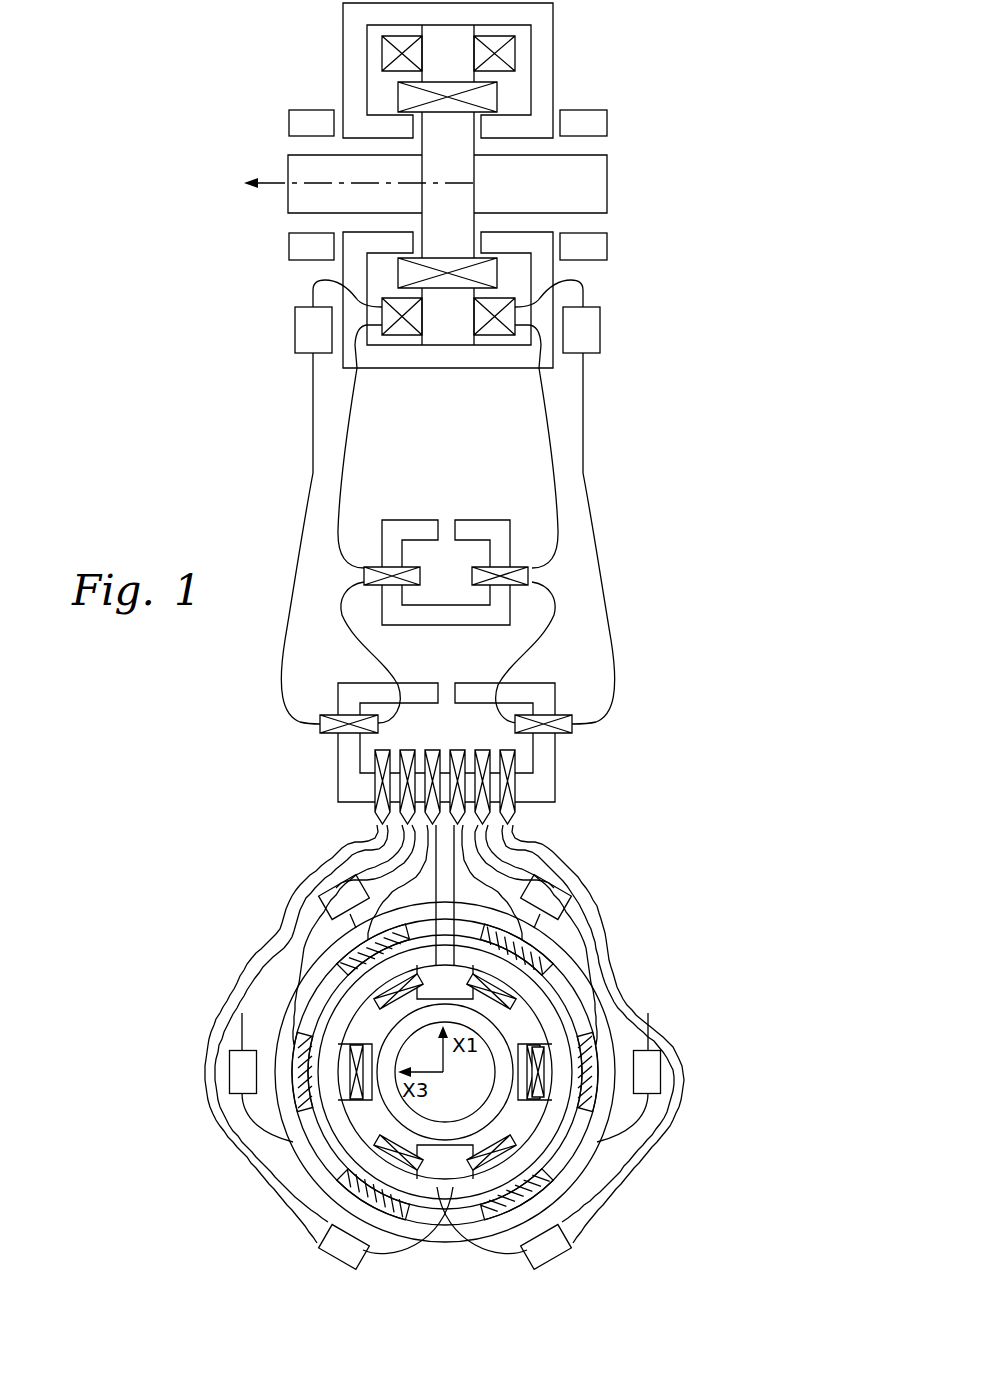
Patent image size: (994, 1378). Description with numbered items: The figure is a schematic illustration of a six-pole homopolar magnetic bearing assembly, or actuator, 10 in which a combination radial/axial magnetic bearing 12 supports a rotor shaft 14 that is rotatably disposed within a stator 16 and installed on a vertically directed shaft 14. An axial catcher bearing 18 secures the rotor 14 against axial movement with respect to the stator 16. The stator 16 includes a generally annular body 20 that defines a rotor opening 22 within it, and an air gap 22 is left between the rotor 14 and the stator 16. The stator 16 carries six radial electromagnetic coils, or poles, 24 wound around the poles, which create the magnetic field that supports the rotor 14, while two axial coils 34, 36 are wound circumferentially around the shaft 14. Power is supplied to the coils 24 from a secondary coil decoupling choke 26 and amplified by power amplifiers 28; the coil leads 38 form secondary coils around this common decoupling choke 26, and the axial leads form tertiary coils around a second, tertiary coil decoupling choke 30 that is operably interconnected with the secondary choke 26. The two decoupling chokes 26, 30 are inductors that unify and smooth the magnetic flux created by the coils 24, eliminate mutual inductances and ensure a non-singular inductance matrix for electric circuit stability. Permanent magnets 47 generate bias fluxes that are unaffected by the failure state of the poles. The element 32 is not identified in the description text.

The magnetic bearing assembly 10 is at (163, 461).
The magnetic bearing 12 is at (727, 119).
The rotor shaft 14 is at (476, 183).
The stator 16 is at (608, 182).
The axial catcher bearing 18 is at (343, 42).
The annular body 20 is at (232, 1176).
The rotor opening 22 is at (520, 1073).
The electromagnetic coils 24 is at (398, 990).
The secondary coil decoupling choke 26 is at (338, 760).
The power amplifiers 28 is at (295, 329).
The tertiary coil decoupling choke 30 is at (420, 520).
The stator yoke 32 is at (497, 1147).
The axial coil 34 is at (492, 272).
The axial coil 36 is at (492, 96).
The coil leads 38 is at (313, 484).
The permanent magnets 47 is at (385, 925).